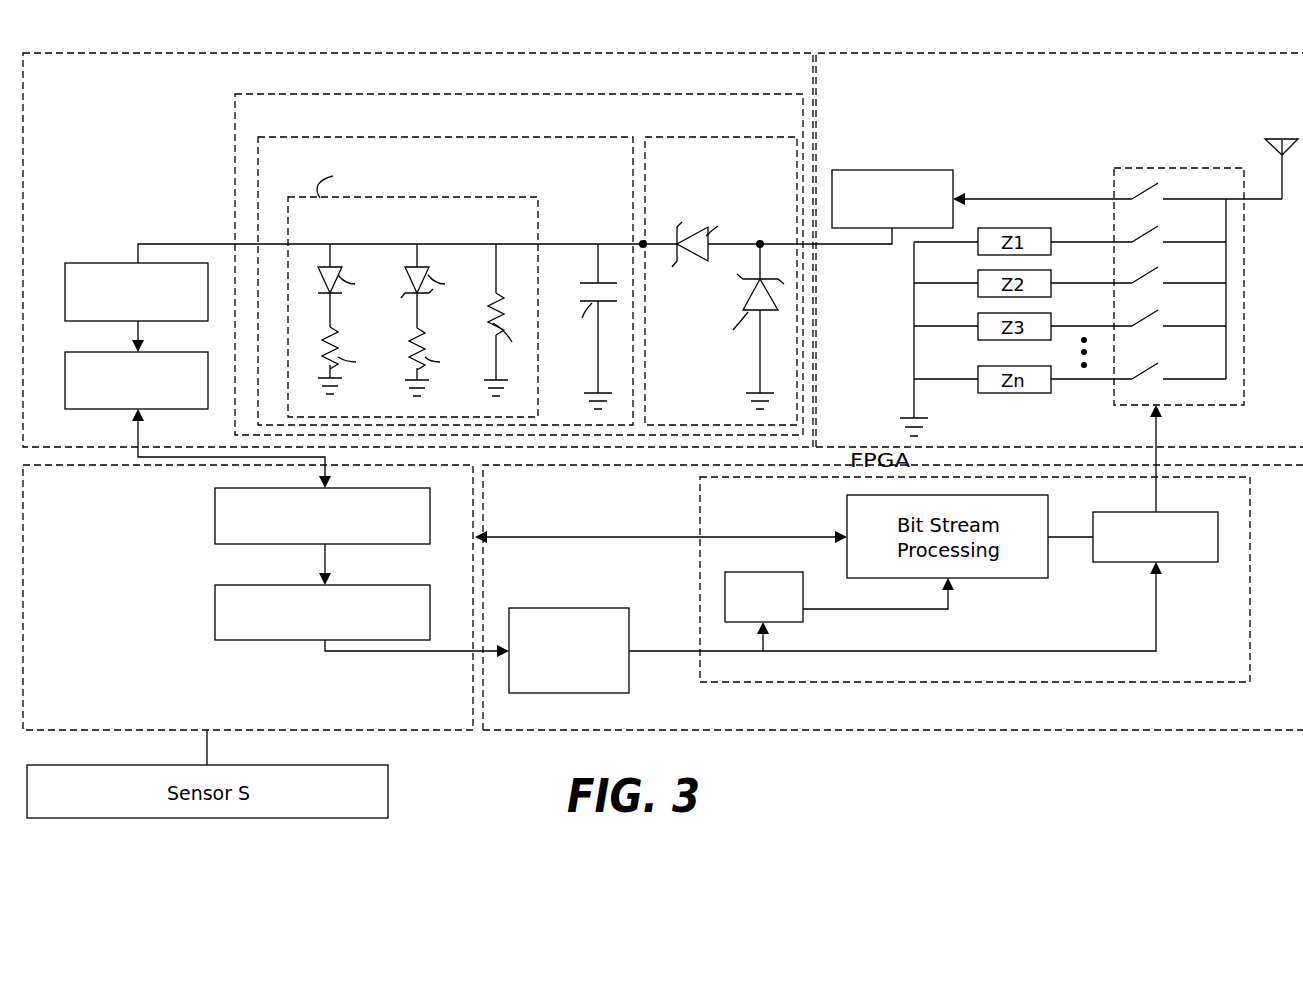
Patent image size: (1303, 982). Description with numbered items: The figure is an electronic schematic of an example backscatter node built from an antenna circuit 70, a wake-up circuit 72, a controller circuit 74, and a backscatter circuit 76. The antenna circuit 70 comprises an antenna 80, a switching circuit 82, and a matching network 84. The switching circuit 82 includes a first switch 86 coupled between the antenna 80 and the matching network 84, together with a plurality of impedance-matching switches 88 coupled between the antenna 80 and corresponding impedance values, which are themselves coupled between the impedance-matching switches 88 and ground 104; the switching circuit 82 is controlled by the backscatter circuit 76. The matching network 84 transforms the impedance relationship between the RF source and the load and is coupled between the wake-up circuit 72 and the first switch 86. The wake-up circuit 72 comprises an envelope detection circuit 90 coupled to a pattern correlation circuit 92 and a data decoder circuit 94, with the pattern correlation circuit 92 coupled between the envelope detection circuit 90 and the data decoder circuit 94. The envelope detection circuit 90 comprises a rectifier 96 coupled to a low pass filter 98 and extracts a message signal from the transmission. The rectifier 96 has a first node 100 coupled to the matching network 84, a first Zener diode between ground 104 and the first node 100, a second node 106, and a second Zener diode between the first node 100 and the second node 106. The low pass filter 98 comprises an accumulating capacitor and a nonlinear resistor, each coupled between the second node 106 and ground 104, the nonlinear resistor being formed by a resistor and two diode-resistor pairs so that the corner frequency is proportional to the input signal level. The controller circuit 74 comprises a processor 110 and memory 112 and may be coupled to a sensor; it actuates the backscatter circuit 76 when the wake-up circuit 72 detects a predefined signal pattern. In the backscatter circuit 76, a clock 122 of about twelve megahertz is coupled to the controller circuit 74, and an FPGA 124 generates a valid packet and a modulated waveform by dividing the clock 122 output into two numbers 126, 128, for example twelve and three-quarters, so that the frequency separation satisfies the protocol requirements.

The antenna circuit 70 is at (1059, 250).
The wake-up circuit 72 is at (418, 250).
The controller circuit 74 is at (248, 597).
The backscatter circuit 76 is at (893, 597).
The antenna 80 is at (1272, 148).
The switching circuit 82 is at (1205, 167).
The matching network 84 is at (905, 170).
The first switch 86 is at (1145, 190).
The impedance-matching switches 88 is at (1148, 238).
The envelope detection circuit 90 is at (519, 264).
The pattern correlation circuit 92 is at (136, 292).
The data decoder circuit 94 is at (136, 380).
The rectifier 96 is at (721, 281).
The low pass filter 98 is at (445, 281).
The first node 100 is at (763, 240).
The ground 104 is at (908, 417).
The second node 106 is at (645, 240).
The processor 110 is at (322, 516).
The memory 112 is at (322, 612).
The clock 122 is at (557, 693).
The FPGA 124 is at (725, 680).
The number 126 is at (743, 572).
The number 128 is at (1115, 565).